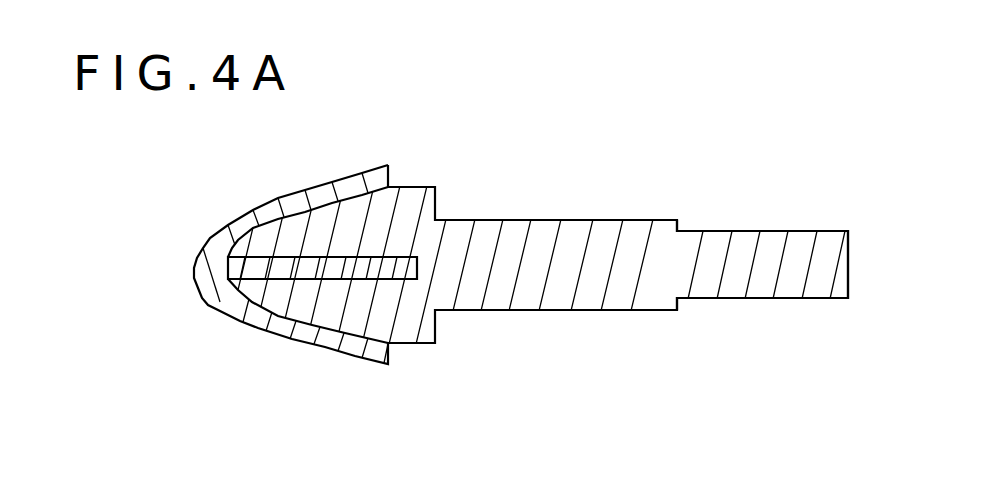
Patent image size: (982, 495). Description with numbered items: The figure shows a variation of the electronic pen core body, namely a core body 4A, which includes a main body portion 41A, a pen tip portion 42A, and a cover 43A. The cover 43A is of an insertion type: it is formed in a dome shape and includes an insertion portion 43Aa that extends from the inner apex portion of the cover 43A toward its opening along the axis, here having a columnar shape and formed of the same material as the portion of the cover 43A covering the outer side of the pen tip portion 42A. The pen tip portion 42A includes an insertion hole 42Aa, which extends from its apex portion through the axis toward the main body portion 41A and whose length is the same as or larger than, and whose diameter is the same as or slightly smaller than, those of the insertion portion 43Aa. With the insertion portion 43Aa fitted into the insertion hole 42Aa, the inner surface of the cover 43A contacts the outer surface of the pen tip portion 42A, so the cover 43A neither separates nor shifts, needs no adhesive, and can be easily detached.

The core body 4A is at (548, 204).
The main body portion 41A is at (530, 302).
The pen tip portion 42A is at (388, 281).
The insertion hole 42Aa is at (364, 311).
The cover 43A is at (267, 322).
The insertion portion 43Aa is at (393, 268).